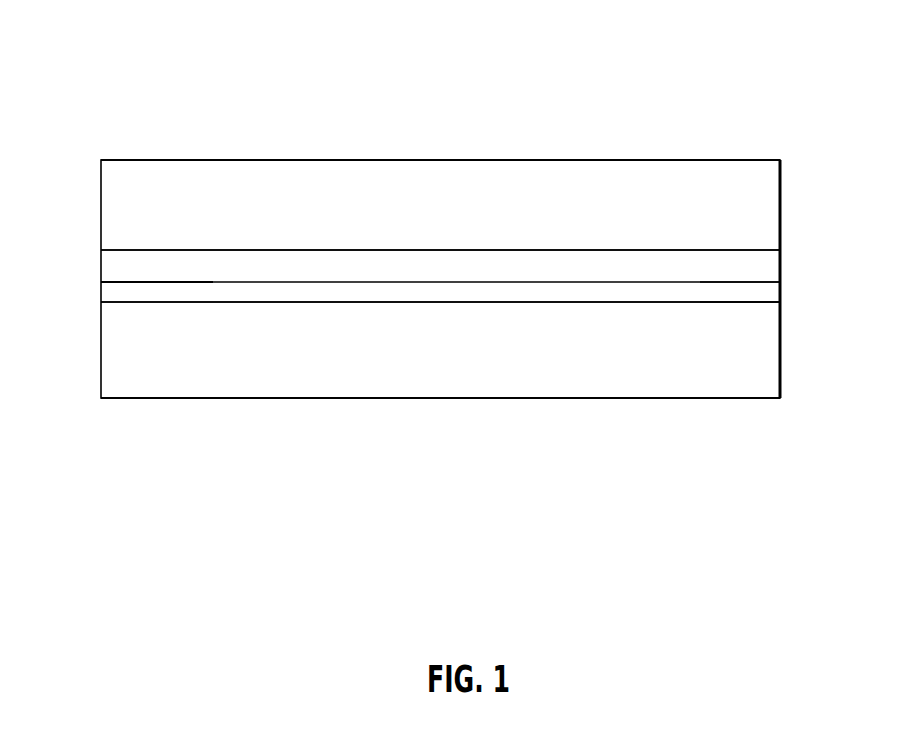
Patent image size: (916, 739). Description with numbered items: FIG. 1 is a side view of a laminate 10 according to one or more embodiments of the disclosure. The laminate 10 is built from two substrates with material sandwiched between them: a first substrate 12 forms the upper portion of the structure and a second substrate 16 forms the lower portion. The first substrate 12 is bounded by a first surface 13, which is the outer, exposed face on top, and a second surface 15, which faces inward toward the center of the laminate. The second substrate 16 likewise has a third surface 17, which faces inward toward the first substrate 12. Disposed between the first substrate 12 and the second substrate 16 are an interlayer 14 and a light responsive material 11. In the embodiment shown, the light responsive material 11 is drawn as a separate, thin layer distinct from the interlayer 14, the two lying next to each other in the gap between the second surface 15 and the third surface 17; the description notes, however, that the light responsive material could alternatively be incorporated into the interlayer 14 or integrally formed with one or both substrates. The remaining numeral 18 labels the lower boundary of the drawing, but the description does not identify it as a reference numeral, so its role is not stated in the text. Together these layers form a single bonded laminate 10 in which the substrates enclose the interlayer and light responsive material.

The laminate 10 is at (203, 453).
The light responsive material 11 is at (758, 268).
The first substrate 12 is at (680, 192).
The first surface 13 is at (443, 160).
The interlayer 14 is at (746, 286).
The second surface 15 is at (240, 250).
The second substrate 16 is at (708, 360).
The third surface 17 is at (122, 298).
The bottom surface 18 is at (448, 398).